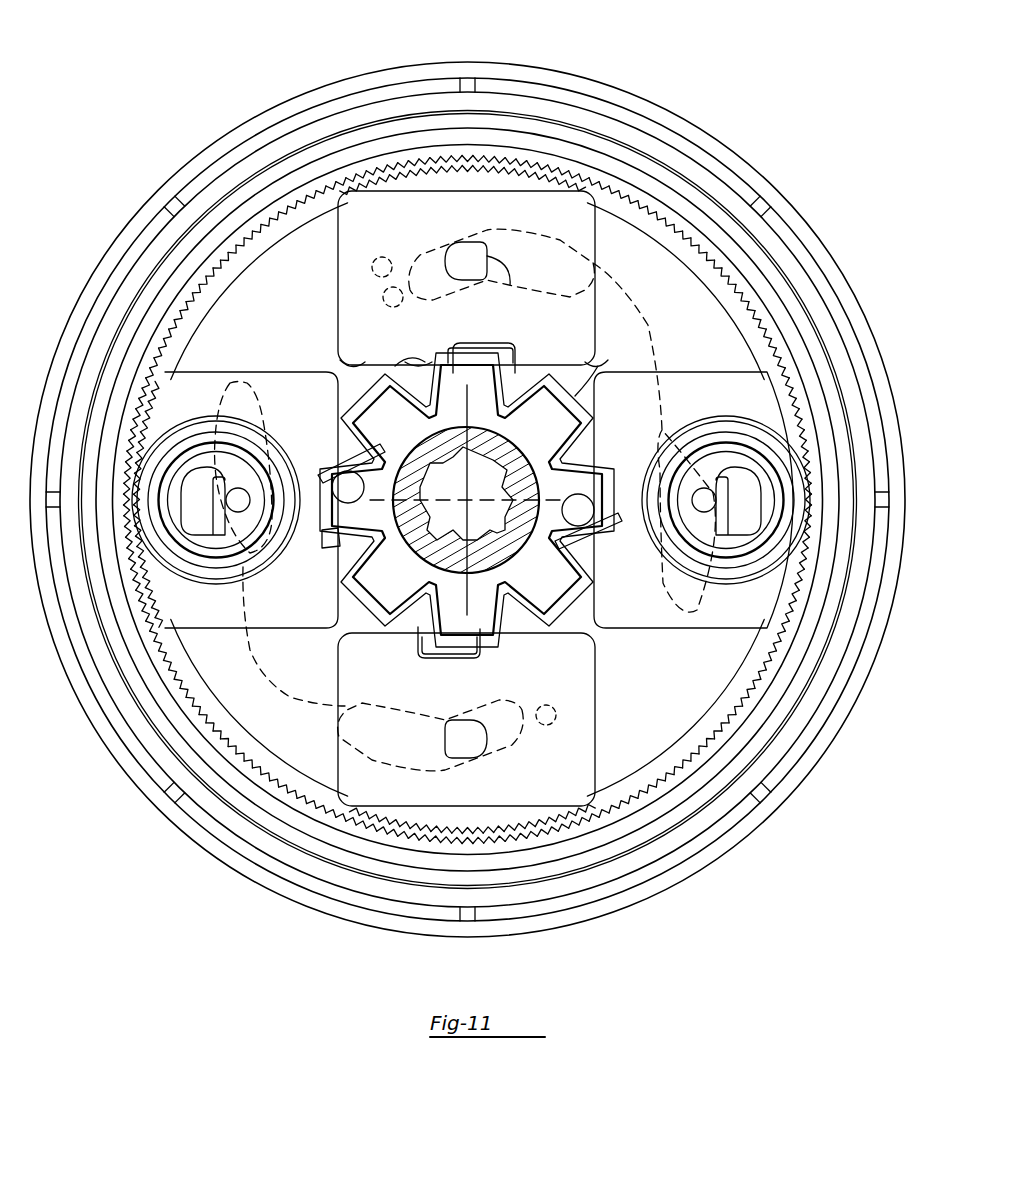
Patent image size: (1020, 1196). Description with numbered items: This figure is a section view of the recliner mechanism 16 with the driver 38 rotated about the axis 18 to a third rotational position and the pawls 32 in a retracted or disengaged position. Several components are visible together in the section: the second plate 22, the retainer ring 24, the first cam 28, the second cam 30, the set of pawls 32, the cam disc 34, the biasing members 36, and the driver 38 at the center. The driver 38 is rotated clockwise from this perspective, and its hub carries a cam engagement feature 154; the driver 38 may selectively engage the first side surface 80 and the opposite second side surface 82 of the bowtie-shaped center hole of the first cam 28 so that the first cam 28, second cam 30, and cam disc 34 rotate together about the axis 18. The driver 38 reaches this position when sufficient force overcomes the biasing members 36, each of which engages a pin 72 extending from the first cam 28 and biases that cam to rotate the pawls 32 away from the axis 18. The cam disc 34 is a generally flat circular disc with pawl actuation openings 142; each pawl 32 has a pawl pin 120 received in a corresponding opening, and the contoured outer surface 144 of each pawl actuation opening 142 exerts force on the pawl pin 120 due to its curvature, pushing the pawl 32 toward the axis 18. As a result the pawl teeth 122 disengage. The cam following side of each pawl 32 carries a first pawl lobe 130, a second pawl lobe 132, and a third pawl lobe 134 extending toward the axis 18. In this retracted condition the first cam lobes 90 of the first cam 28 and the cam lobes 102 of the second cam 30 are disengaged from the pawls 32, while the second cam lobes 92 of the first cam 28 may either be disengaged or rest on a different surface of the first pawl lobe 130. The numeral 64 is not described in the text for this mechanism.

The recliner mechanism 16 is at (216, 76).
The axis 18 is at (462, 478).
The second plate 22 is at (100, 376).
The retainer ring 24 is at (94, 272).
The first cam 28 is at (333, 538).
The second cam 30 is at (328, 545).
The pawl 32 is at (446, 220).
The cam disc 34 is at (728, 690).
The biasing member 36 is at (267, 440).
The driver 38 is at (417, 558).
The ring 64 is at (206, 708).
The pin 72 is at (463, 498).
The first side surface 80 is at (466, 426).
The second side surface 82 is at (548, 408).
The first cam lobe 90 is at (470, 368).
The second cam lobe 92 is at (573, 398).
The cam lobe 102 is at (404, 365).
The pawl pin 120 is at (510, 282).
The pawl teeth 122 is at (405, 165).
The first pawl lobe 130 is at (596, 366).
The second pawl lobe 132 is at (418, 362).
The third pawl lobe 134 is at (352, 356).
The pawl actuation opening 142 is at (465, 484).
The outer surface 144 is at (527, 240).
The cam engagement feature 154 is at (467, 357).